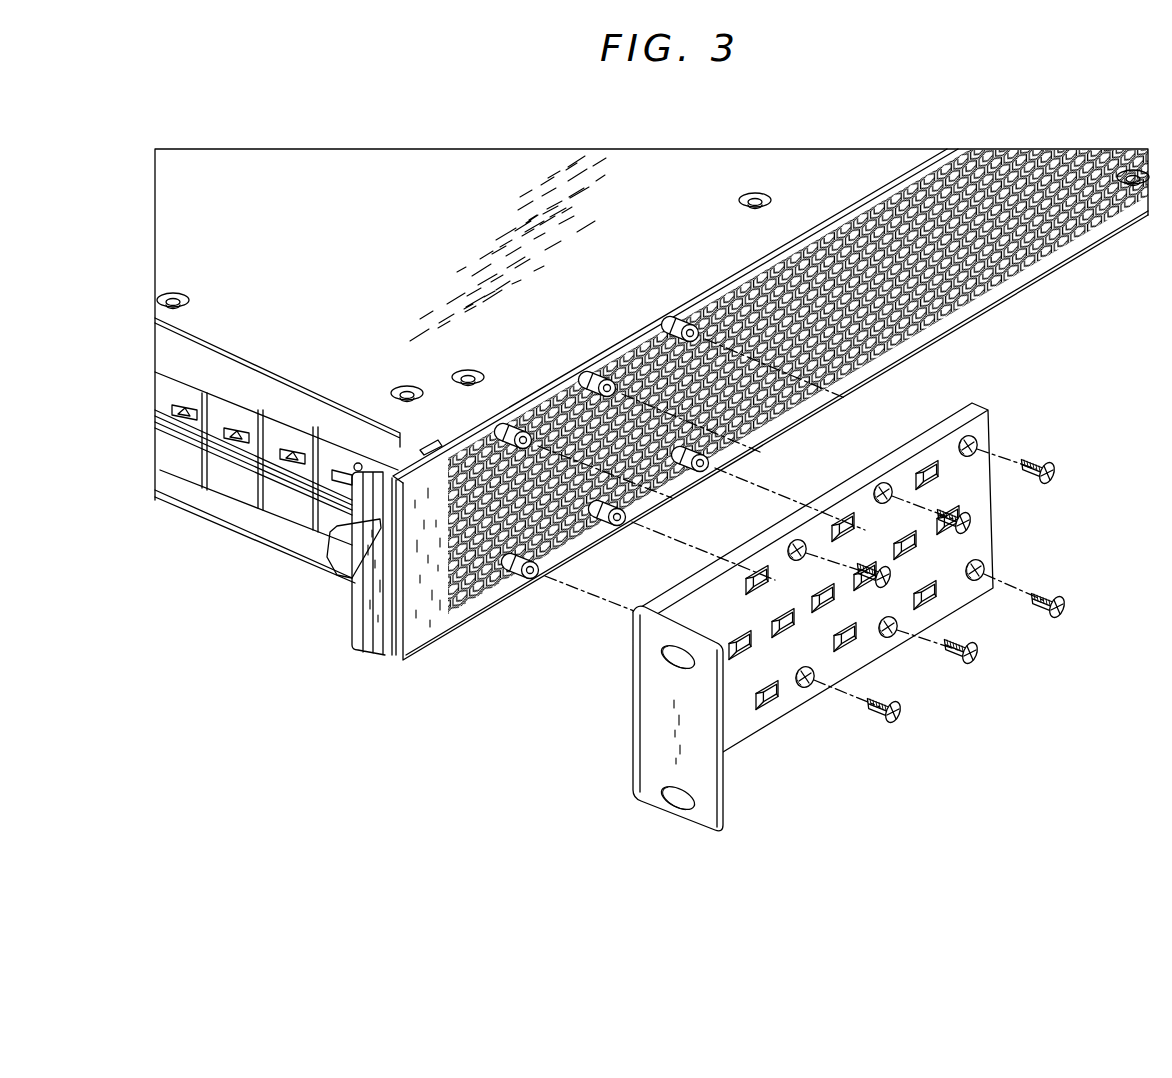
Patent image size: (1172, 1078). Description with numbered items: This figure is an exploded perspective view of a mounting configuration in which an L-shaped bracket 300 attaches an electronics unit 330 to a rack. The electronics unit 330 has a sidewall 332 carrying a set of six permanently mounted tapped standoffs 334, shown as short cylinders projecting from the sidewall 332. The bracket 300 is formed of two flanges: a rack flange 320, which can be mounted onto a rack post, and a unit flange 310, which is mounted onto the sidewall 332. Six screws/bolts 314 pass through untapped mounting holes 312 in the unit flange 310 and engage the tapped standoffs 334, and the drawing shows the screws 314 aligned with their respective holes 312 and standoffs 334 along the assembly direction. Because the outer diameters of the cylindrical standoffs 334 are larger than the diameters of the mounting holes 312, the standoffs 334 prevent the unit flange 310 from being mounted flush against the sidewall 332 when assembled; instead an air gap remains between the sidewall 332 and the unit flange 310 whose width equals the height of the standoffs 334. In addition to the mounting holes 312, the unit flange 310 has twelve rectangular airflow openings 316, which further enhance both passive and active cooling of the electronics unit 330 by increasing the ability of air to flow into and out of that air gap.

The L-shaped bracket 300 is at (847, 607).
The unit flange 310 is at (841, 567).
The mounting holes 312 is at (984, 573).
The screws/bolts 314 is at (1067, 612).
The airflow openings 316 is at (750, 588).
The rack flange 320 is at (660, 745).
The electronics unit 330 is at (652, 413).
The sidewall 332 is at (423, 633).
The tapped standoffs 334 is at (538, 580).